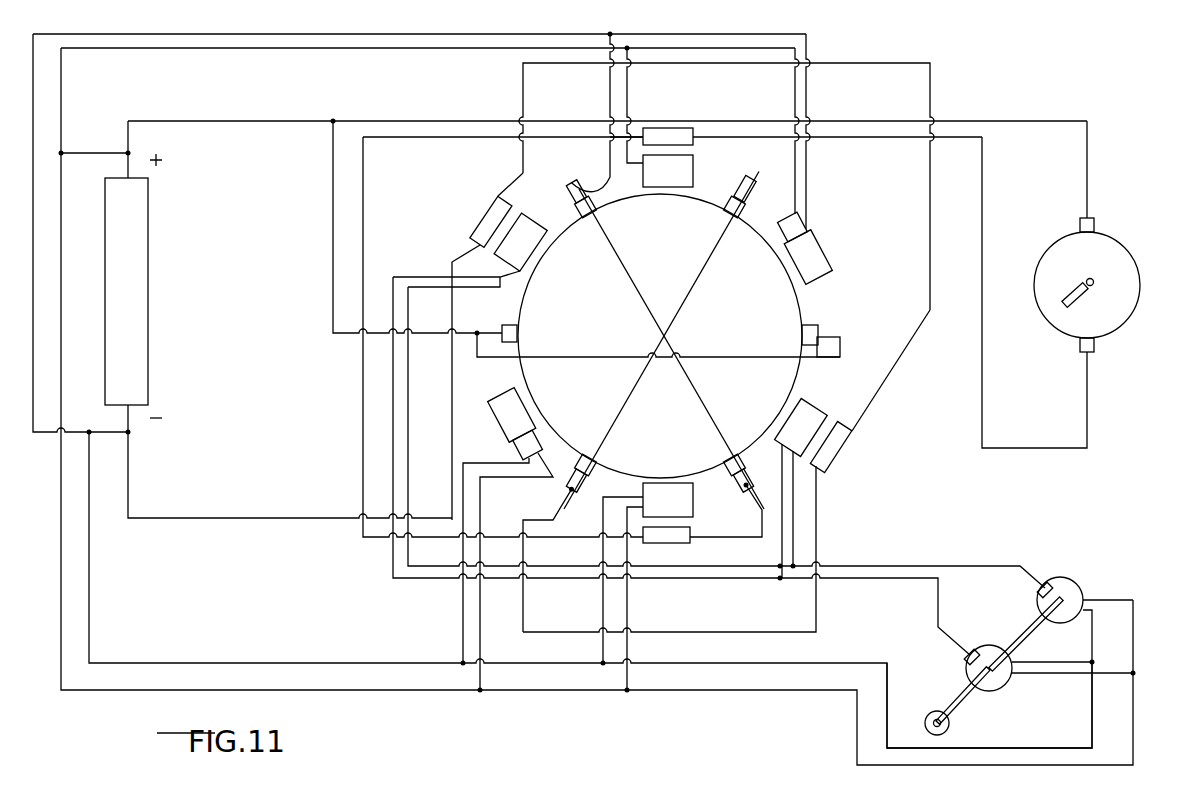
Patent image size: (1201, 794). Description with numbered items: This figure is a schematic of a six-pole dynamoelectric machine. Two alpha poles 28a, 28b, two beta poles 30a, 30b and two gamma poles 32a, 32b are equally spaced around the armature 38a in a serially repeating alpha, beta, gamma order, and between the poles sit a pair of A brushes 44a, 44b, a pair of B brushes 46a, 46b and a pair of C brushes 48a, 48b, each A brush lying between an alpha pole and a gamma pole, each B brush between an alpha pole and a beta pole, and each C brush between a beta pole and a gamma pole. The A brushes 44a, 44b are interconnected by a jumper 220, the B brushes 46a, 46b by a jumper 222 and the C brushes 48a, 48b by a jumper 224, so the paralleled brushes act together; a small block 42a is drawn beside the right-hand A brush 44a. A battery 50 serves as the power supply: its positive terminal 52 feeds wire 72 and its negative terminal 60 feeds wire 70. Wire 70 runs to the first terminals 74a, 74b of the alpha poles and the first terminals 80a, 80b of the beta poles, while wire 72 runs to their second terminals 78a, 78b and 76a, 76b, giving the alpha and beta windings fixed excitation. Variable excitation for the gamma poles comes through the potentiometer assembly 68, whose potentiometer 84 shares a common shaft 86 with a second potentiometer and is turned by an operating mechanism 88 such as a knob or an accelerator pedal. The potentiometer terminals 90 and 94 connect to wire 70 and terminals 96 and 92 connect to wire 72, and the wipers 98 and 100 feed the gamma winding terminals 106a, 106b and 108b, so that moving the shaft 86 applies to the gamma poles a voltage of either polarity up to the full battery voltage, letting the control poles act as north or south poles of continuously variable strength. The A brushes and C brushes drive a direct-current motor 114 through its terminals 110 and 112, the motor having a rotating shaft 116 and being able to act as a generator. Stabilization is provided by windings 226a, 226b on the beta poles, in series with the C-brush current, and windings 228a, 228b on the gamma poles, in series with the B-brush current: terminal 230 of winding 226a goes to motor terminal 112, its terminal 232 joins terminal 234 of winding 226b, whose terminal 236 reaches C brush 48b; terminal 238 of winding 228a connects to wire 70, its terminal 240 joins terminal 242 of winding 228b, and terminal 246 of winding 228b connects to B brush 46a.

The alpha pole 28a is at (505, 410).
The alpha pole 28b is at (820, 258).
The beta pole 30a is at (693, 178).
The beta pole 30b is at (693, 500).
The gamma pole 32a is at (528, 235).
The gamma pole 32b is at (800, 412).
The armature 38a is at (803, 305).
The terminal block 42a is at (832, 337).
The A brush 44a is at (818, 332).
The A brush 44b is at (509, 324).
The B brush 46a is at (575, 478).
The B brush 46b is at (745, 200).
The C brush 48a is at (580, 210).
The C brush 48b is at (728, 462).
The battery 50 is at (148, 275).
The positive terminal 52 is at (130, 145).
The negative terminal 60 is at (128, 470).
The potentiometer assembly 68 is at (1032, 640).
The wire 70 is at (337, 36).
The wire 72 is at (390, 50).
The first terminal of alpha pole winding 74a is at (540, 455).
The first terminal of alpha pole winding 74b is at (808, 222).
The second terminal of beta pole winding 76a is at (627, 150).
The second terminal of beta pole winding 76b is at (615, 497).
The second terminal of alpha pole winding 78a is at (548, 462).
The second terminal of alpha pole winding 78b is at (797, 210).
The first terminal of beta pole winding 80a is at (598, 180).
The first terminal of beta pole winding 80b is at (622, 512).
The potentiometer 84 is at (1078, 586).
The common shaft 86 is at (995, 680).
The operating mechanism 88 is at (949, 726).
The first terminal of potentiometer 90 is at (1080, 655).
The second terminal of potentiometer 92 is at (1115, 600).
The first terminal of potentiometer 94 is at (1092, 612).
The second terminal of potentiometer 96 is at (1120, 673).
The wiper 98 is at (975, 652).
The wiper 100 is at (1048, 586).
The first terminal of gamma winding 106a is at (455, 257).
The first terminal of gamma winding 106b is at (448, 280).
The second terminal of gamma winding 108b is at (793, 505).
The first terminal of motor 110 is at (1088, 190).
The second terminal of motor 112 is at (1090, 362).
The direct current motor 114 is at (1105, 255).
The rotating shaft 116 is at (1094, 288).
The jumper 220 is at (592, 357).
The jumper 222 is at (640, 405).
The jumper 224 is at (735, 400).
The stabilization winding 226a is at (672, 133).
The stabilization winding 226b is at (665, 543).
The stabilization winding 228a is at (498, 210).
The stabilization winding 228b is at (845, 440).
The first terminal of stabilization winding 230 is at (702, 137).
The second terminal of stabilization winding 232 is at (648, 125).
The first terminal of stabilization winding 234 is at (640, 545).
The second terminal of stabilization winding 236 is at (693, 543).
The first terminal of stabilization winding 238 is at (470, 245).
The second terminal of stabilization winding 240 is at (522, 160).
The first terminal of stabilization winding 242 is at (855, 395).
The second terminal of stabilization winding 246 is at (818, 488).